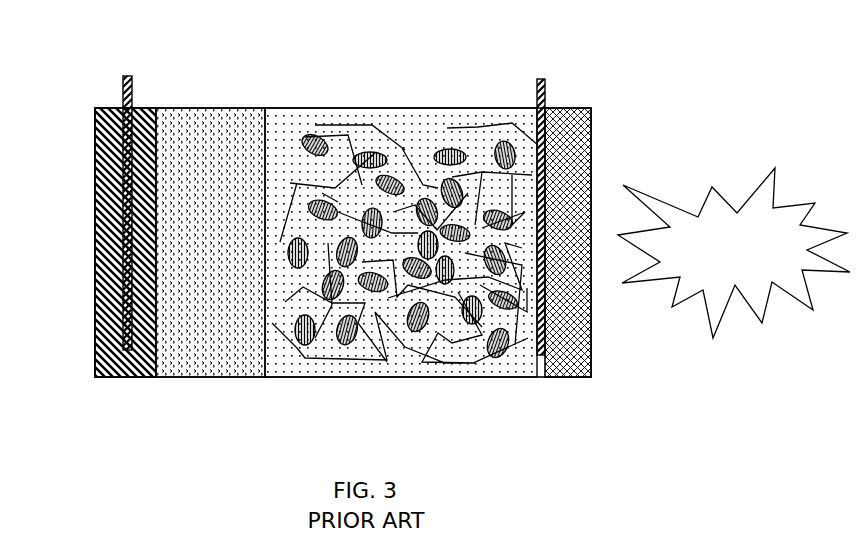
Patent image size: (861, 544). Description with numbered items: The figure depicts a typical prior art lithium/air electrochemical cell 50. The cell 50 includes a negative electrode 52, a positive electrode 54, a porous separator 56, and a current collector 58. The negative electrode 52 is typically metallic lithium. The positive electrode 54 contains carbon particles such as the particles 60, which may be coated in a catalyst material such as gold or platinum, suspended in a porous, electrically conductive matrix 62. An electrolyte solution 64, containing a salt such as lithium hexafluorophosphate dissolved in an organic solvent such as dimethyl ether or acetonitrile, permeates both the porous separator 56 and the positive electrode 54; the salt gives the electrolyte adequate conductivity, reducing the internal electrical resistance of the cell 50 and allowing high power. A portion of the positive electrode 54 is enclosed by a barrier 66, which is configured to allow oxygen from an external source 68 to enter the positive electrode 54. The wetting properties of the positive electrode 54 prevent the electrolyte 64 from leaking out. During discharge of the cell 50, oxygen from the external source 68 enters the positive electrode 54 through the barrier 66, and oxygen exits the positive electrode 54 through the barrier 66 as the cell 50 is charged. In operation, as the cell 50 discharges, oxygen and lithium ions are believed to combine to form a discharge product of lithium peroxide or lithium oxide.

The lithium/air electrochemical cell 50 is at (131, 52).
The negative electrode 52 is at (95, 200).
The positive electrode 54 is at (494, 377).
The porous separator 56 is at (197, 377).
The current collector 58 is at (545, 97).
The carbon particles 60 is at (317, 143).
The porous, electrically conductive matrix 62 is at (398, 145).
The electrolyte solution 64 is at (398, 362).
The barrier 66 is at (591, 122).
The external source 68 is at (777, 180).